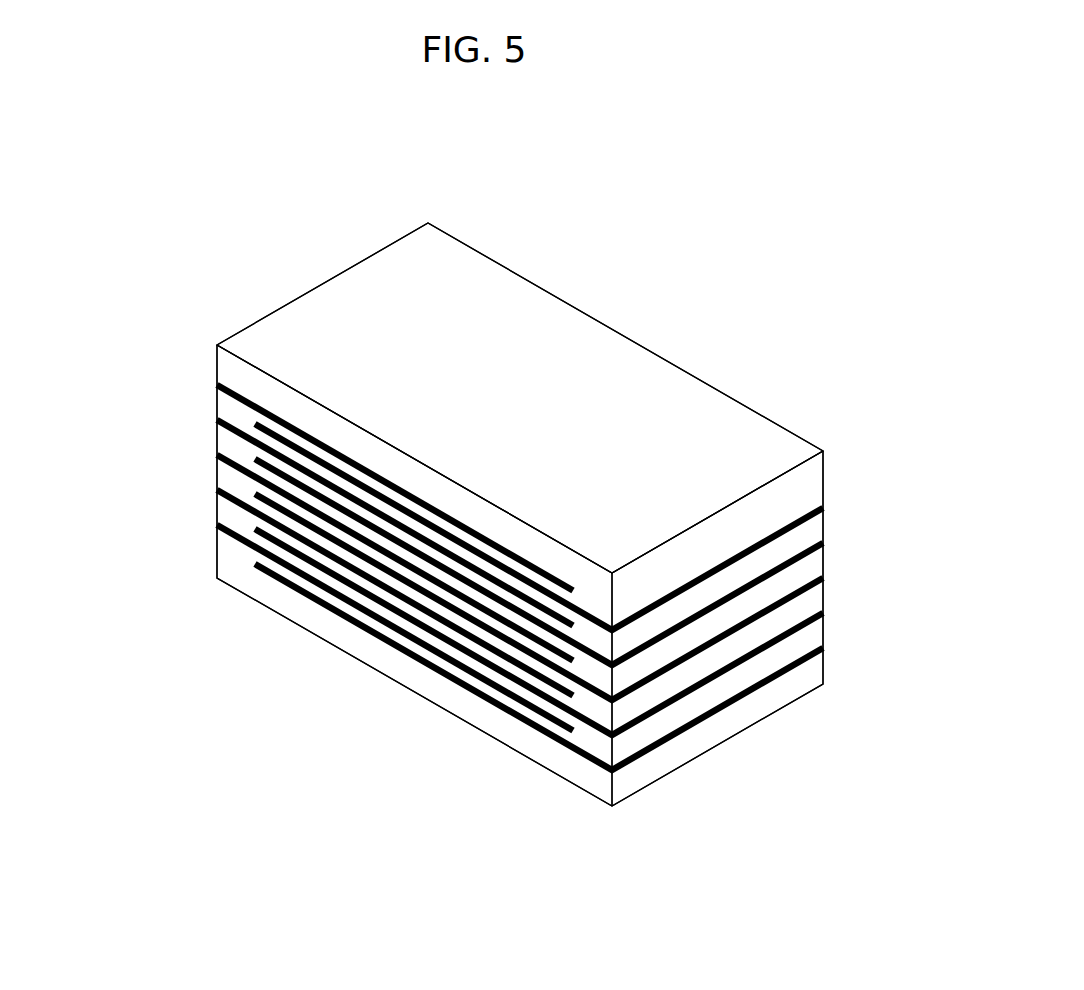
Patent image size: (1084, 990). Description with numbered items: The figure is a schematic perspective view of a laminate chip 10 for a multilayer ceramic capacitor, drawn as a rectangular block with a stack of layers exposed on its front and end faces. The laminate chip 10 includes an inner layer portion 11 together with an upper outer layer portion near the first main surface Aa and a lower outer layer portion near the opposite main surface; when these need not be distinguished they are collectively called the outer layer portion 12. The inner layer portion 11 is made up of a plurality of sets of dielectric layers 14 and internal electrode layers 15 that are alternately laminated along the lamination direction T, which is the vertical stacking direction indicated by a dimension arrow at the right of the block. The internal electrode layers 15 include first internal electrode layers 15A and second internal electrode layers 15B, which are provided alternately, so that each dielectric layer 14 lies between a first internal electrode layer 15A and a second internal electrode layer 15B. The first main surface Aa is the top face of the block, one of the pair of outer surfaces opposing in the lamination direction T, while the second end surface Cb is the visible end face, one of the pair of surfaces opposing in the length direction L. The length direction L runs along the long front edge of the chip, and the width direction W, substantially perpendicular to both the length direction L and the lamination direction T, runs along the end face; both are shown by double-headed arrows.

The laminate chip 10 is at (821, 310).
The inner layer portion 11 is at (433, 540).
The outer layer portion 12 is at (805, 492).
The dielectric layer 14 is at (178, 388).
The internal electrode layer 15 is at (453, 577).
The first internal electrode layer 15A is at (252, 440).
The second internal electrode layer 15B is at (267, 473).
The first main surface Aa is at (532, 399).
The second end surface Cb is at (808, 606).
The lamination direction T is at (933, 484).
The length direction L is at (479, 848).
The width direction W is at (899, 781).